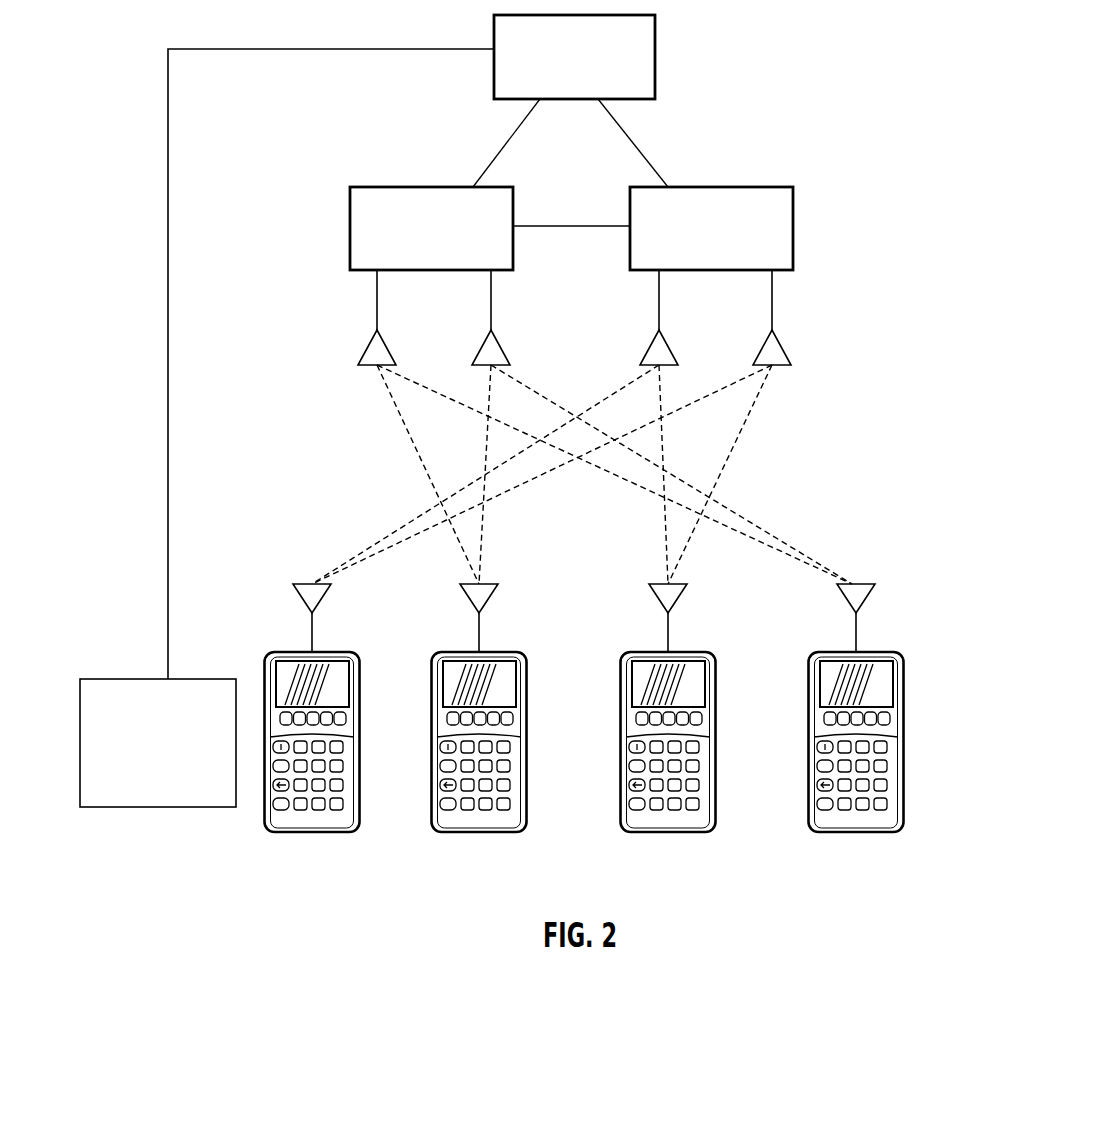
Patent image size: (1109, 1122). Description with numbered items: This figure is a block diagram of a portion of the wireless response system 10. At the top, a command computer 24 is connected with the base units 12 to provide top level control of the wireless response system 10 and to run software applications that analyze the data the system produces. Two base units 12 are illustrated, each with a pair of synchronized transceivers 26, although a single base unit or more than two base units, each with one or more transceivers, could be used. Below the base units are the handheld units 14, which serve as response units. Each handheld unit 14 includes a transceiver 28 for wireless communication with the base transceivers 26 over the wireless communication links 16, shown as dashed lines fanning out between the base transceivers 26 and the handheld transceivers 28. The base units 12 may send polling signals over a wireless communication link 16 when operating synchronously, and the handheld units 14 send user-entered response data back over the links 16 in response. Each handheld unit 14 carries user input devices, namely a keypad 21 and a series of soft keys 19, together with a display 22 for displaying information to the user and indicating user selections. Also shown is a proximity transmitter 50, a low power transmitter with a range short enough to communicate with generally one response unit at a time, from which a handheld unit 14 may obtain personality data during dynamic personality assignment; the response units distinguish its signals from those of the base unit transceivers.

The wireless response system 10 is at (287, 447).
The base unit 12 is at (390, 181).
The handheld unit 14 is at (334, 650).
The wireless communication link 16 is at (411, 432).
The soft keys 19 is at (340, 716).
The keypad 21 is at (340, 745).
The display 22 is at (350, 682).
The command computer 24 is at (655, 41).
The transceiver 26 is at (377, 318).
The transceiver 28 is at (303, 605).
The proximity transmitter 50 is at (147, 679).